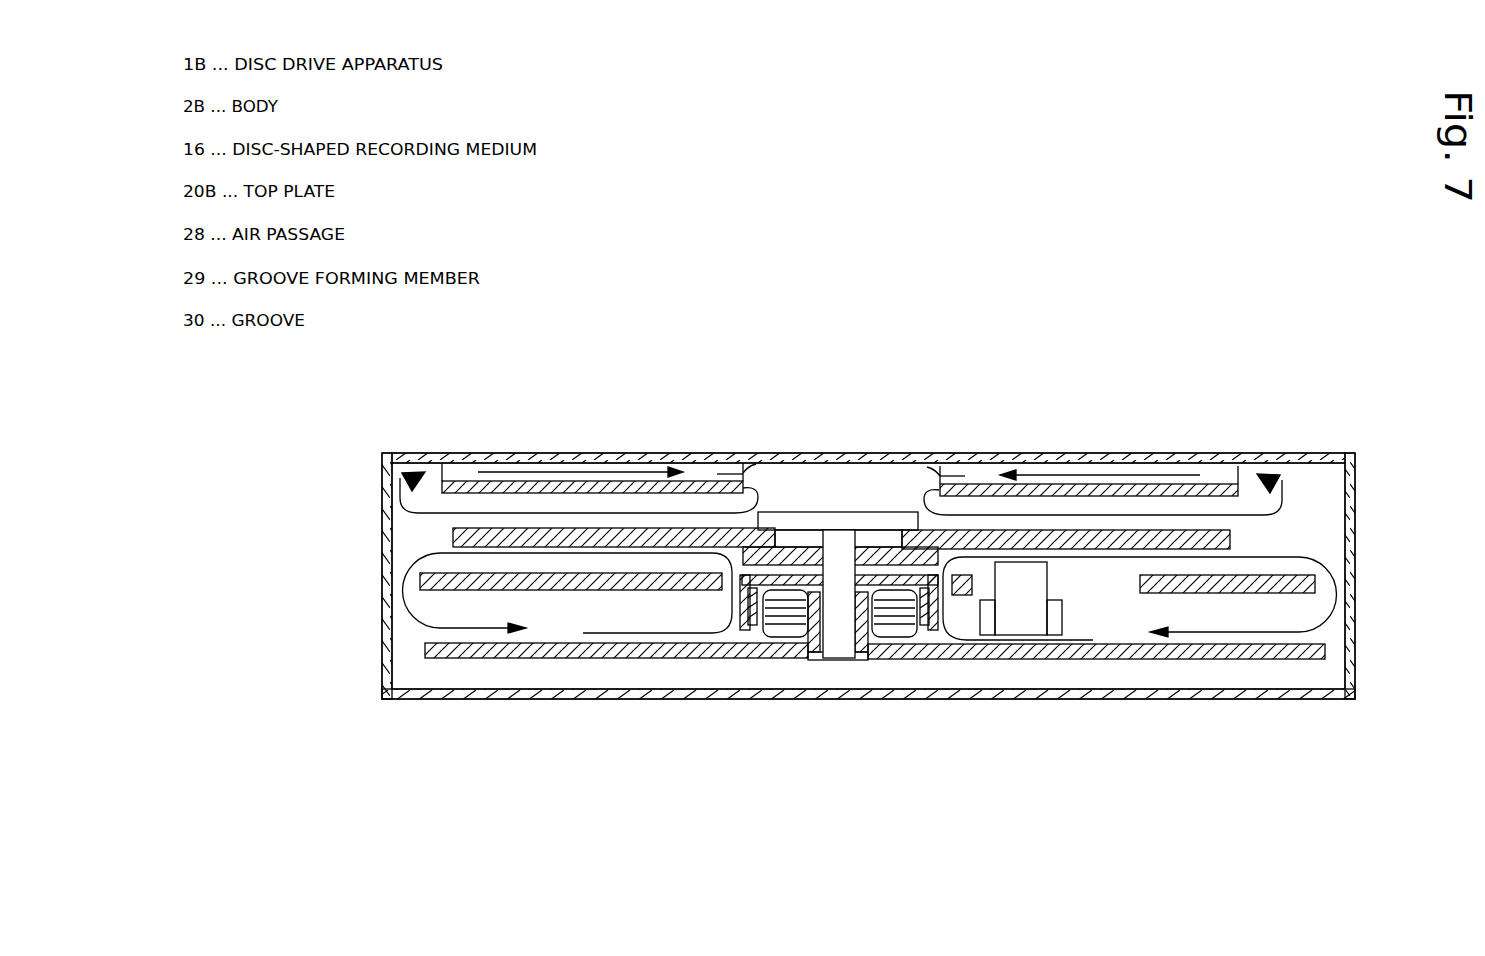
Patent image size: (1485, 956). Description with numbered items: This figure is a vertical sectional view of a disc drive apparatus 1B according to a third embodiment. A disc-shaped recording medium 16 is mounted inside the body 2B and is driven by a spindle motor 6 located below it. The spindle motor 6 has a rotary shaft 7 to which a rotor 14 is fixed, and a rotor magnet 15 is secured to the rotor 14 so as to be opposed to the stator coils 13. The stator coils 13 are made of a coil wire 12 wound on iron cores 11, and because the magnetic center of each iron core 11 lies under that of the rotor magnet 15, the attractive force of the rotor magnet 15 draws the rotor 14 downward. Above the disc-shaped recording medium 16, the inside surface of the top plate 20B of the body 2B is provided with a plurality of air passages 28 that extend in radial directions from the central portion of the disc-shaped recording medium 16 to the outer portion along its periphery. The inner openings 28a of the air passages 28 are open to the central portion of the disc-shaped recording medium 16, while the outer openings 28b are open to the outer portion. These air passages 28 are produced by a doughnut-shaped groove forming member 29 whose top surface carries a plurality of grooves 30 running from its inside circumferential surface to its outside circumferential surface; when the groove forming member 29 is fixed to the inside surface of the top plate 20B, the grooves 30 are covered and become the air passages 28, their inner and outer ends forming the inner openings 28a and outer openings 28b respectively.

The disc drive apparatus 1B is at (875, 320).
The body 2B is at (1228, 700).
The disc-shaped recording medium 16 is at (635, 528).
The top plate 20B is at (905, 453).
The air passages 28 is at (598, 470).
The inner openings 28a is at (753, 465).
The outer openings 28b is at (433, 465).
The groove forming member 29 is at (577, 493).
The grooves 30 is at (496, 472).
The rotary shaft 7 is at (838, 547).
The spindle motor 6 is at (940, 639).
The iron cores 11 is at (888, 625).
The coil wire 12 is at (756, 625).
The stator coils 13 is at (919, 628).
The rotor 14 is at (740, 590).
The rotor magnet 15 is at (750, 650).